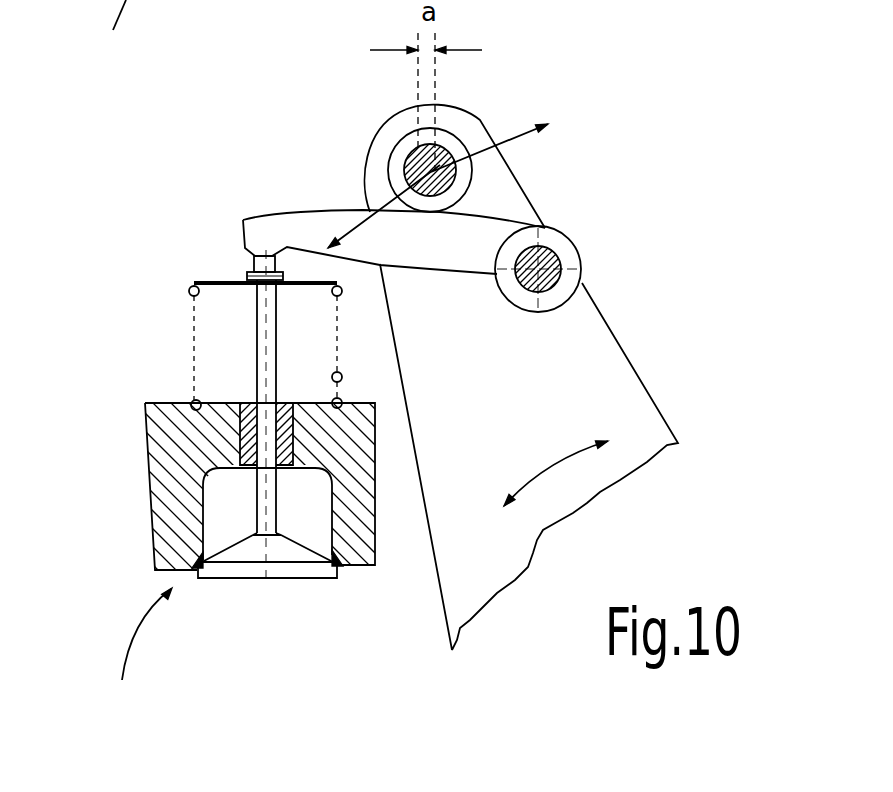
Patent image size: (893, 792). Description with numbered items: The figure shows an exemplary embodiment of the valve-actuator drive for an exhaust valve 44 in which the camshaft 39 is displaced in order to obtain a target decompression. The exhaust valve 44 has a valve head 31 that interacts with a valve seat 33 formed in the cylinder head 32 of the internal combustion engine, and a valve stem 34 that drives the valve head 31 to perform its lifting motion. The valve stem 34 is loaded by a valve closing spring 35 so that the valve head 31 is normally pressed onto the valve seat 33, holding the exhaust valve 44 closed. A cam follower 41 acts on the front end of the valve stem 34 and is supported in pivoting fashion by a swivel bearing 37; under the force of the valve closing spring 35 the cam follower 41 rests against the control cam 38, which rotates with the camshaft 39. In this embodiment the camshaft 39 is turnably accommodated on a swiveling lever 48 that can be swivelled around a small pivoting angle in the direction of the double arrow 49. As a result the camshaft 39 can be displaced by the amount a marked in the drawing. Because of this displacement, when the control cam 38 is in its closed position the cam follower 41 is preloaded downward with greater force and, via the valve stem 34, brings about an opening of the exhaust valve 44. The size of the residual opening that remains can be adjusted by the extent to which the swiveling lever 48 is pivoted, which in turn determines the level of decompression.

The valve head 31 is at (268, 568).
The cylinder head 32 is at (177, 500).
The valve seat 33 is at (338, 572).
The valve stem 34 is at (258, 353).
The valve closing spring 35 is at (190, 289).
The swivel bearing 37 is at (552, 248).
The control cam 38 is at (445, 118).
The camshaft 39 is at (445, 158).
The cam follower 41 is at (288, 232).
The exhaust valve 44 is at (140, 358).
The swiveling lever 48 is at (575, 353).
The double arrow 49 is at (550, 470).